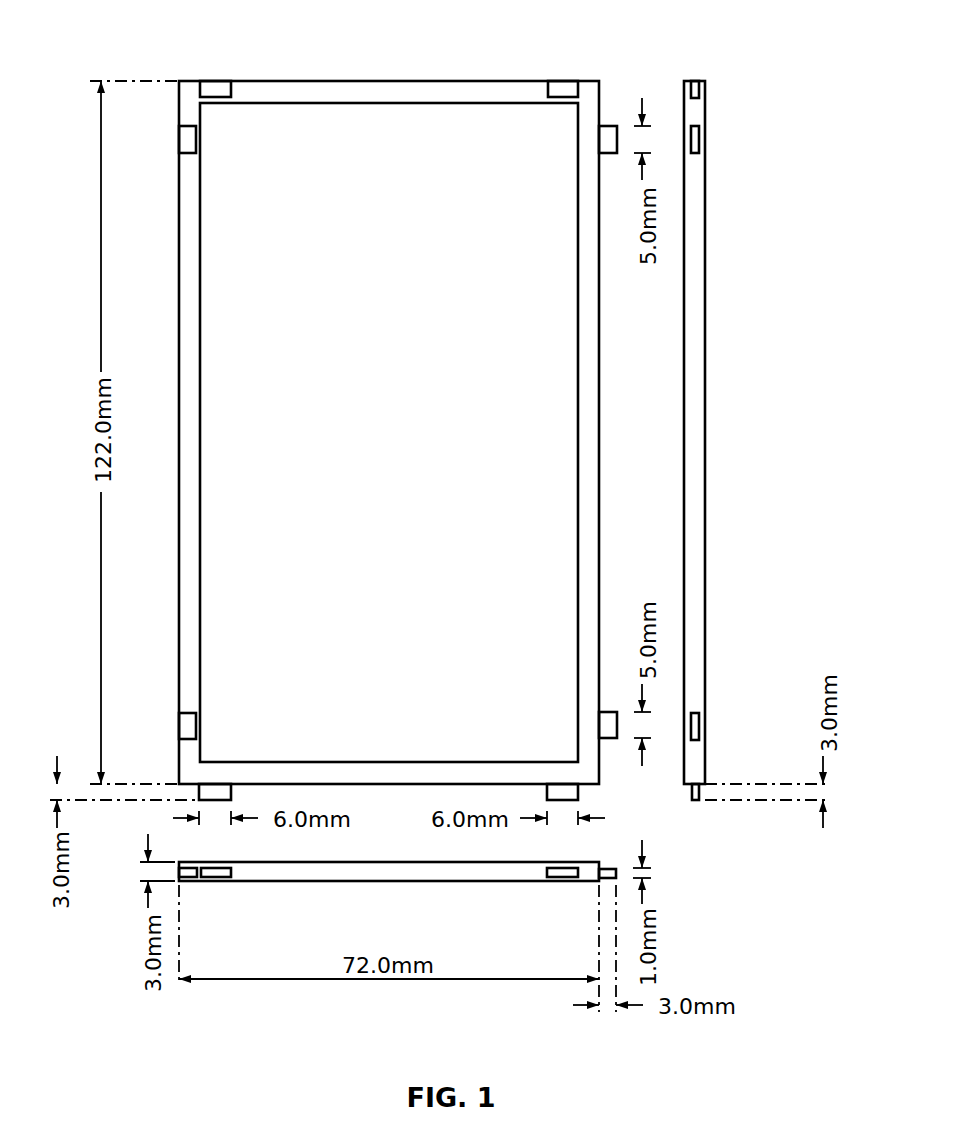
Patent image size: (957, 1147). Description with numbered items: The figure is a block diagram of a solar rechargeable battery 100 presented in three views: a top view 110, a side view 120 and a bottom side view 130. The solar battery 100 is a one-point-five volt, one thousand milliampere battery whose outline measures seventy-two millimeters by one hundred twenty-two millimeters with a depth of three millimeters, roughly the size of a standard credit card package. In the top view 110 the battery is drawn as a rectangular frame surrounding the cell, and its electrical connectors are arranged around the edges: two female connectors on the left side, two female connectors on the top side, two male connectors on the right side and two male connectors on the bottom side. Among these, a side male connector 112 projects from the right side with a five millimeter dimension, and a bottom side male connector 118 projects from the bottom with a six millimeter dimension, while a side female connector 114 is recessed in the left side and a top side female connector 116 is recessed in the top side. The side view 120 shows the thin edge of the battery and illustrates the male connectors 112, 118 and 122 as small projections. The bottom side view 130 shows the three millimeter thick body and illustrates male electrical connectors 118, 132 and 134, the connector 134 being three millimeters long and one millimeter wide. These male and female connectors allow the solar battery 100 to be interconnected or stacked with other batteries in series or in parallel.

The solar rechargeable battery 100 is at (535, 485).
The top view 110 is at (578, 340).
The side male connector 112 is at (617, 725).
The side female connector 114 is at (178, 722).
The top side female connector 116 is at (568, 80).
The bottom side male connector 118 is at (562, 868).
The side view 120 is at (705, 600).
The male connector 122 is at (617, 139).
The bottom side view 130 is at (425, 882).
The male electrical connector 132 is at (230, 878).
The male electrical connector 134 is at (616, 878).